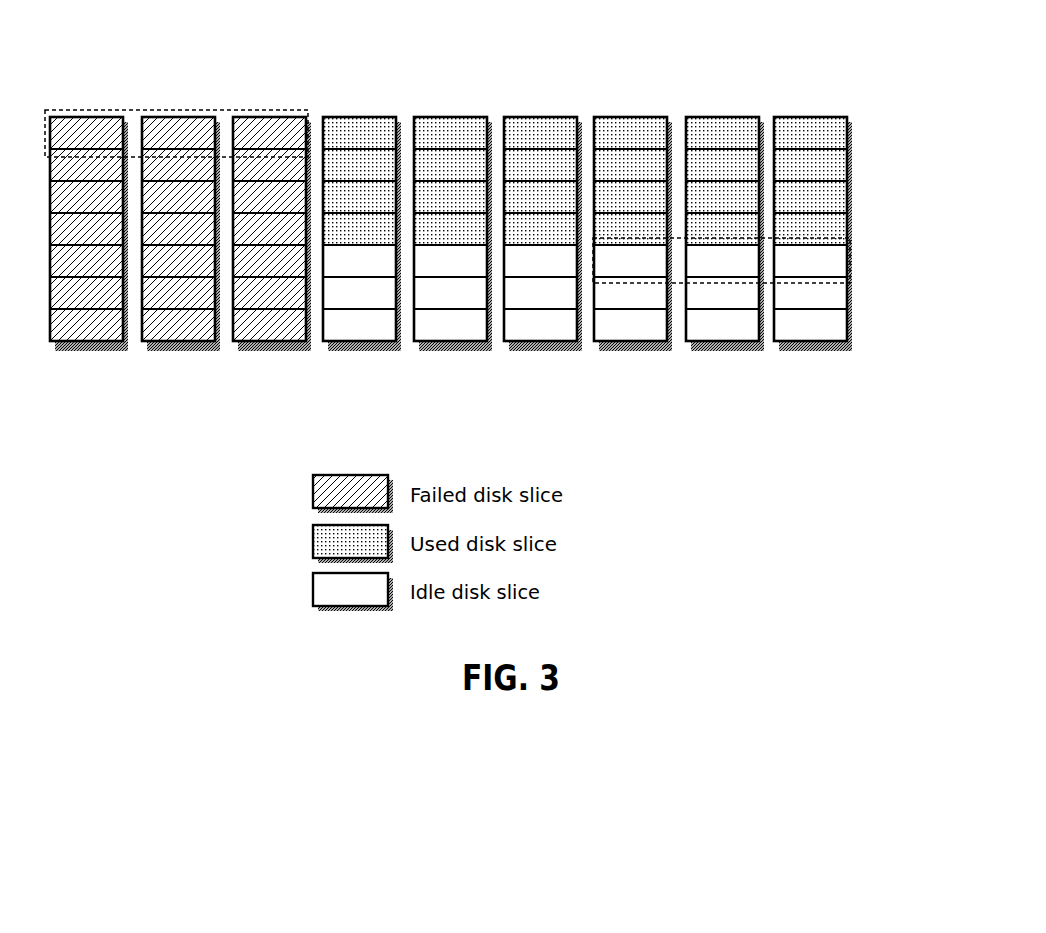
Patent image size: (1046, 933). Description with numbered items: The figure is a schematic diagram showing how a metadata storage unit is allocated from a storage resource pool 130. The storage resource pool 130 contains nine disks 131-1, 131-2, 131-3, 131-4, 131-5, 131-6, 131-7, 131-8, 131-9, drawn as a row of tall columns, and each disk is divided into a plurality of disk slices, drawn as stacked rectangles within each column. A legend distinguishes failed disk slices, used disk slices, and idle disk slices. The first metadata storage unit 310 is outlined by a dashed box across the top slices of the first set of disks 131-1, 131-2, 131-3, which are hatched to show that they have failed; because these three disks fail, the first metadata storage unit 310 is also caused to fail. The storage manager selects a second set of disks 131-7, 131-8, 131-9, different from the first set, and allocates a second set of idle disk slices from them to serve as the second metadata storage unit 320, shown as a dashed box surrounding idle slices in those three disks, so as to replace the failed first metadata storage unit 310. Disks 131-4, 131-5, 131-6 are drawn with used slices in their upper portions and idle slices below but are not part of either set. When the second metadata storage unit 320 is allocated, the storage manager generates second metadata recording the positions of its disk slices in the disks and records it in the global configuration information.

The storage resource pool 130 is at (170, 63).
The first metadata storage unit 310 is at (178, 111).
The second metadata storage unit 320 is at (855, 262).
The disk 131-1 is at (92, 347).
The disk 131-2 is at (179, 347).
The disk 131-3 is at (269, 347).
The disk 131-4 is at (365, 347).
The disk 131-5 is at (450, 347).
The disk 131-6 is at (540, 347).
The disk 131-7 is at (634, 347).
The disk 131-8 is at (720, 347).
The disk 131-9 is at (810, 347).